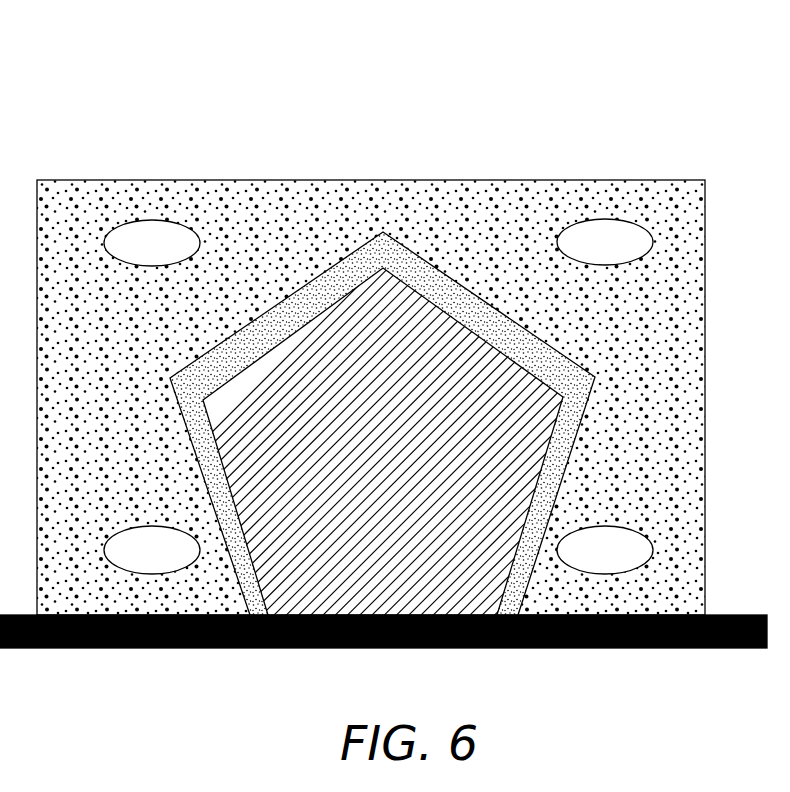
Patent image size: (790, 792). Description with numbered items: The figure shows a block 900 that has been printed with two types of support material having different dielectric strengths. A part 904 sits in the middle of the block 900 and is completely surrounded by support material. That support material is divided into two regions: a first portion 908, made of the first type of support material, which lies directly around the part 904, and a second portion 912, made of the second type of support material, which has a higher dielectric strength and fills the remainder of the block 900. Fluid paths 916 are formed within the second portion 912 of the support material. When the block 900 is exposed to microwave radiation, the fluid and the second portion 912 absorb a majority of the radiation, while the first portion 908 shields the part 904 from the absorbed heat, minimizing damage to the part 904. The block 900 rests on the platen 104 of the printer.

The block 900 is at (172, 63).
The part 904 is at (328, 338).
The first portion of support material 908 is at (357, 262).
The second portion of support material 912 is at (480, 217).
The fluid paths 916 is at (605, 240).
The platen 104 is at (682, 649).